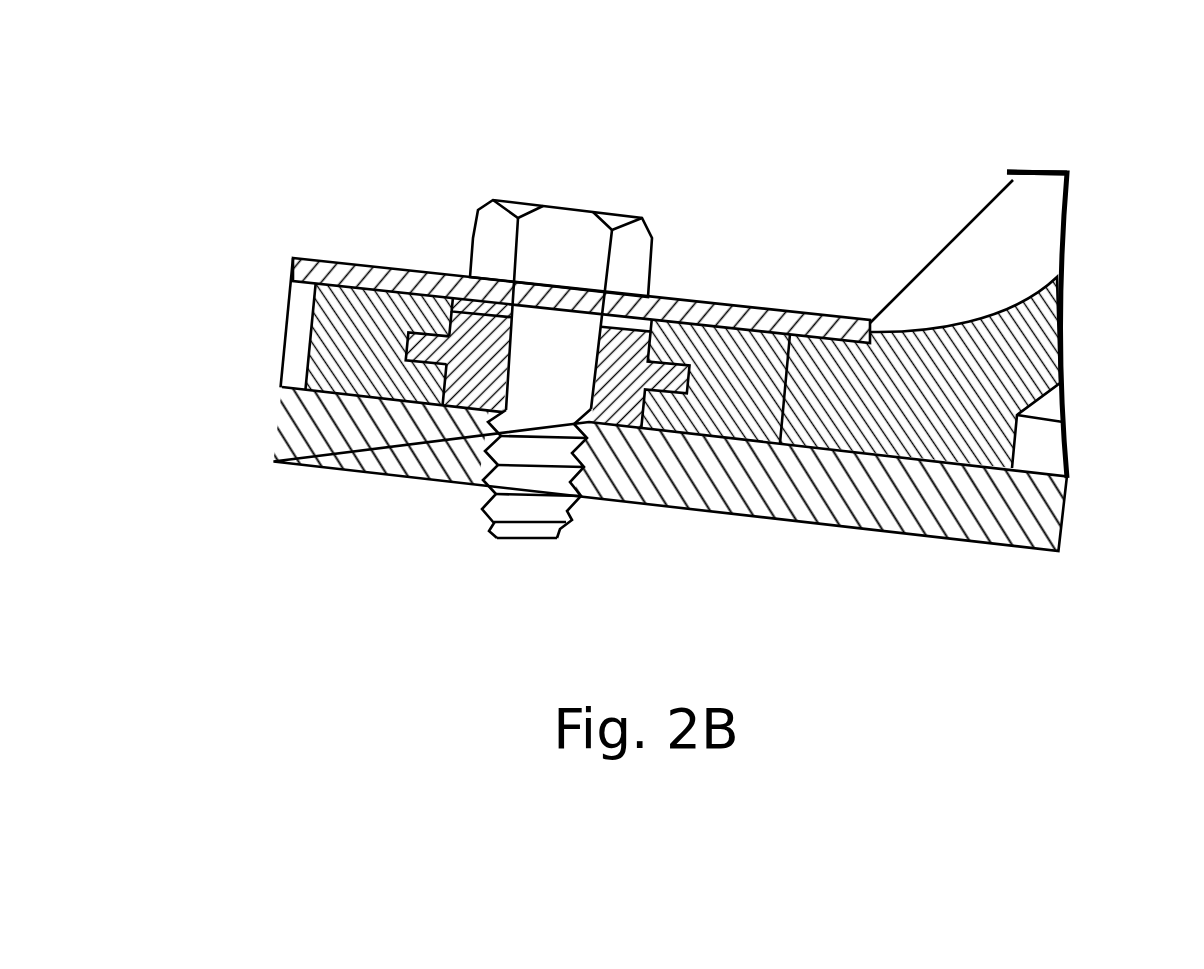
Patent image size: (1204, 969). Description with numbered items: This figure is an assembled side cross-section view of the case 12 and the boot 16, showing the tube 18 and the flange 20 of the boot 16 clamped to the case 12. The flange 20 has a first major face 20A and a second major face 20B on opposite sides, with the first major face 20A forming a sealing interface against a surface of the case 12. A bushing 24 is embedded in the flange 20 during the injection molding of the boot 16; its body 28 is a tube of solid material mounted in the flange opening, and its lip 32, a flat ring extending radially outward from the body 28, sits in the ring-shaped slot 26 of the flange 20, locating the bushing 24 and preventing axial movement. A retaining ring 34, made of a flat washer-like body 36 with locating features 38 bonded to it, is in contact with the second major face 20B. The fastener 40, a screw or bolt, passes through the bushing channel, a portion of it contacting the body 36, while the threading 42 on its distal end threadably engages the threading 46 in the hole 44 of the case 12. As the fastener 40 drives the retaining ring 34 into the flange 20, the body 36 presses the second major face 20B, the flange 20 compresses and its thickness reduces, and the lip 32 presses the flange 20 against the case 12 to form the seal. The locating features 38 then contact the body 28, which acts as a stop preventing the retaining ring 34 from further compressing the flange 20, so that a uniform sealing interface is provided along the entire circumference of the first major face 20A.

The case 12 is at (755, 520).
The boot 16 is at (1066, 320).
The tube 18 is at (1020, 231).
The flange 20 is at (283, 329).
The first major face 20A is at (322, 392).
The second major face 20B is at (378, 282).
The bushing 24 is at (466, 386).
The slot 26 is at (656, 362).
The body 28 is at (615, 396).
The lip 32 is at (426, 365).
The retaining ring 34 is at (713, 302).
The body 36 is at (824, 320).
The locating features 38 is at (461, 303).
The fastener 40 is at (564, 205).
The threading 42 is at (526, 524).
The hole 44 is at (579, 480).
The threading 46 is at (489, 459).